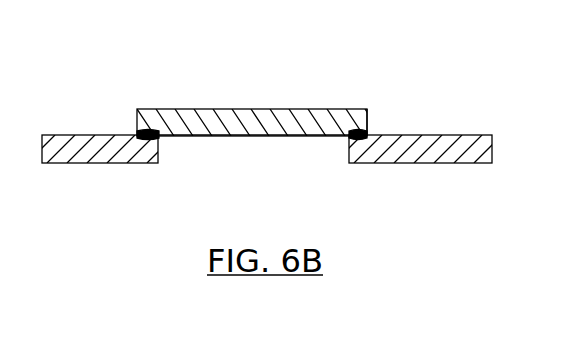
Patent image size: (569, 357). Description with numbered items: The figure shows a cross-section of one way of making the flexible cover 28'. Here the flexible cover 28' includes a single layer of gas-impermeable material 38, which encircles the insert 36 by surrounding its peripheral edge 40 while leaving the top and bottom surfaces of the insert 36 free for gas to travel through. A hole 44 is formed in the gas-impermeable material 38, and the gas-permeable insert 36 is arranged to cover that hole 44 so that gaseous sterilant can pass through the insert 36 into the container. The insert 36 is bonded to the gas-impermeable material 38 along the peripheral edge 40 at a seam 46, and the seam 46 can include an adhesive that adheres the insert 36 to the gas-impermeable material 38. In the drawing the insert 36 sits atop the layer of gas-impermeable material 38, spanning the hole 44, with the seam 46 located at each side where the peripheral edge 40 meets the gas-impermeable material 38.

The flexible cover 28' is at (491, 41).
The insert 36 is at (312, 109).
The gas-impermeable material 38 is at (73, 135).
The peripheral edge 40 is at (368, 108).
The hole 44 is at (269, 163).
The seam 46 is at (150, 132).